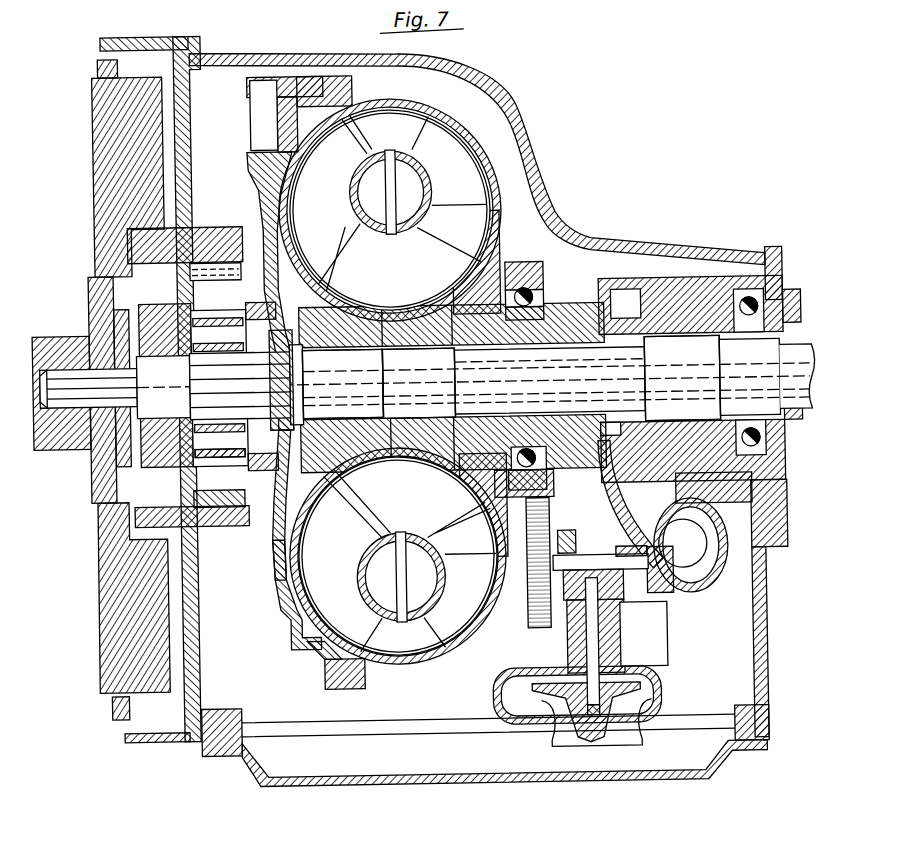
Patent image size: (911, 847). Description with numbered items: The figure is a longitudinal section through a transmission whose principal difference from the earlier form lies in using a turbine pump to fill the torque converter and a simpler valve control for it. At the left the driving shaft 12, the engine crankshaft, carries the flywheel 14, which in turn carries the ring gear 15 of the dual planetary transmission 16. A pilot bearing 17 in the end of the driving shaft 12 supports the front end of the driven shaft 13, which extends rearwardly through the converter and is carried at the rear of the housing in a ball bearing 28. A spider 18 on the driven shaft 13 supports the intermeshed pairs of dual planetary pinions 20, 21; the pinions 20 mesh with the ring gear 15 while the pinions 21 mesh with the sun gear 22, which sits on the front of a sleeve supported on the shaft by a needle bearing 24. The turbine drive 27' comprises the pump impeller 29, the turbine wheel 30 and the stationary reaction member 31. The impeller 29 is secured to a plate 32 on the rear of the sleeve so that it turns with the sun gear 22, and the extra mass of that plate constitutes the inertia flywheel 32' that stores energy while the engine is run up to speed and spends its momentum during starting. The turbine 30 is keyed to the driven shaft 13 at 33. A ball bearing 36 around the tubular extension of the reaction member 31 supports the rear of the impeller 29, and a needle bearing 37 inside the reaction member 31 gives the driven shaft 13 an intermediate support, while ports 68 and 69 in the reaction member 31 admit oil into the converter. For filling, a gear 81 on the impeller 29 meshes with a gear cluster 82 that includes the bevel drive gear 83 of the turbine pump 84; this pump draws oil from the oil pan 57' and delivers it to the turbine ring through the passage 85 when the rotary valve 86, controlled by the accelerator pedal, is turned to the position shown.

The driving shaft 12 is at (62, 446).
The driven shaft 13 is at (475, 382).
The flywheel 14 is at (97, 174).
The ring gear 15 is at (213, 252).
The dual planetary transmission 16 is at (164, 319).
The pilot bearing 17 is at (92, 343).
The spider 18 is at (166, 442).
The planetary pinions 20 is at (192, 270).
The planetary pinions 21 is at (207, 438).
The sun gear 22 is at (242, 426).
The needle bearing 24 is at (212, 353).
The turbine drive 27' is at (255, 570).
The ball bearing 28 is at (773, 300).
The pump impeller 29 is at (466, 169).
The turbine wheel 30 is at (268, 206).
The reaction member 31 is at (432, 246).
The plate 32 is at (287, 545).
The inertia flywheel 32' is at (315, 680).
The key 33 is at (338, 352).
The ball bearing 36 is at (524, 312).
The needle bearing 37 is at (425, 348).
The oil pan 57' is at (447, 759).
The port 68 is at (626, 440).
The port 69 is at (447, 453).
The gear 81 is at (550, 496).
The gear cluster 82 is at (529, 610).
The bevel drive gear 83 is at (617, 593).
The turbine pump 84 is at (520, 700).
The passage 85 is at (630, 508).
The rotary valve 86 is at (698, 520).